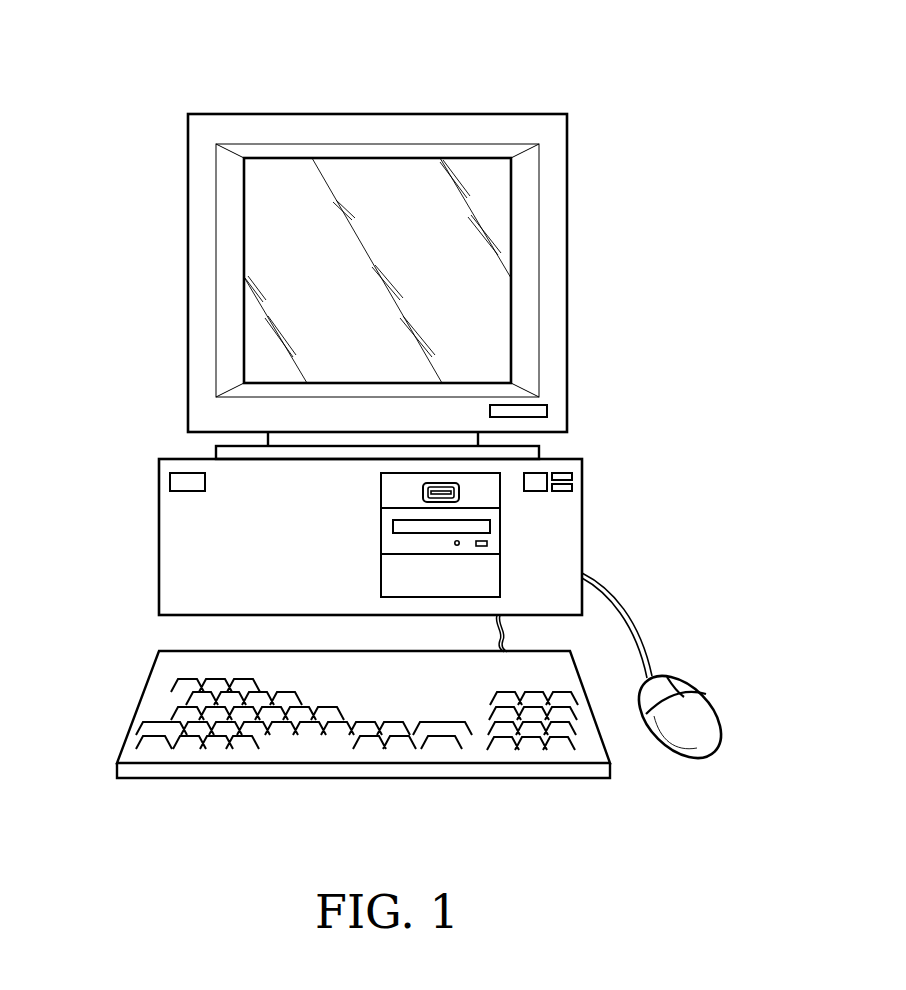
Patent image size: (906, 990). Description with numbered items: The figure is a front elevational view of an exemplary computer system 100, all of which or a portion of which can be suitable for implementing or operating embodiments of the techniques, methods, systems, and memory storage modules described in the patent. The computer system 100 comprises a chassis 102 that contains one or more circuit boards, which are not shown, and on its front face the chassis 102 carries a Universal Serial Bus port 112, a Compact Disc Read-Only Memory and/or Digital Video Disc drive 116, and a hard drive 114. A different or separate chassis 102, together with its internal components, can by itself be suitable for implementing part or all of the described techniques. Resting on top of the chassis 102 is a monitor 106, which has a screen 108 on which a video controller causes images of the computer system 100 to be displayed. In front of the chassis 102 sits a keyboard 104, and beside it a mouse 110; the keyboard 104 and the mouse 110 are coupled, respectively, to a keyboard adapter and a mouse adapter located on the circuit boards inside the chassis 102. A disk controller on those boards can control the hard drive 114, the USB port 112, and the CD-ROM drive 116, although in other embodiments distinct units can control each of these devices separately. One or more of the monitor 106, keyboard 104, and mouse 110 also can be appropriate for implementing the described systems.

The computer system 100 is at (568, 78).
The chassis 102 is at (159, 540).
The keyboard 104 is at (138, 708).
The monitor 106 is at (262, 113).
The screen 108 is at (292, 277).
The mouse 110 is at (700, 707).
The Universal Serial Bus (USB) port 112 is at (459, 487).
The hard drive 114 is at (491, 575).
The CD-ROM and/or DVD drive 116 is at (490, 533).